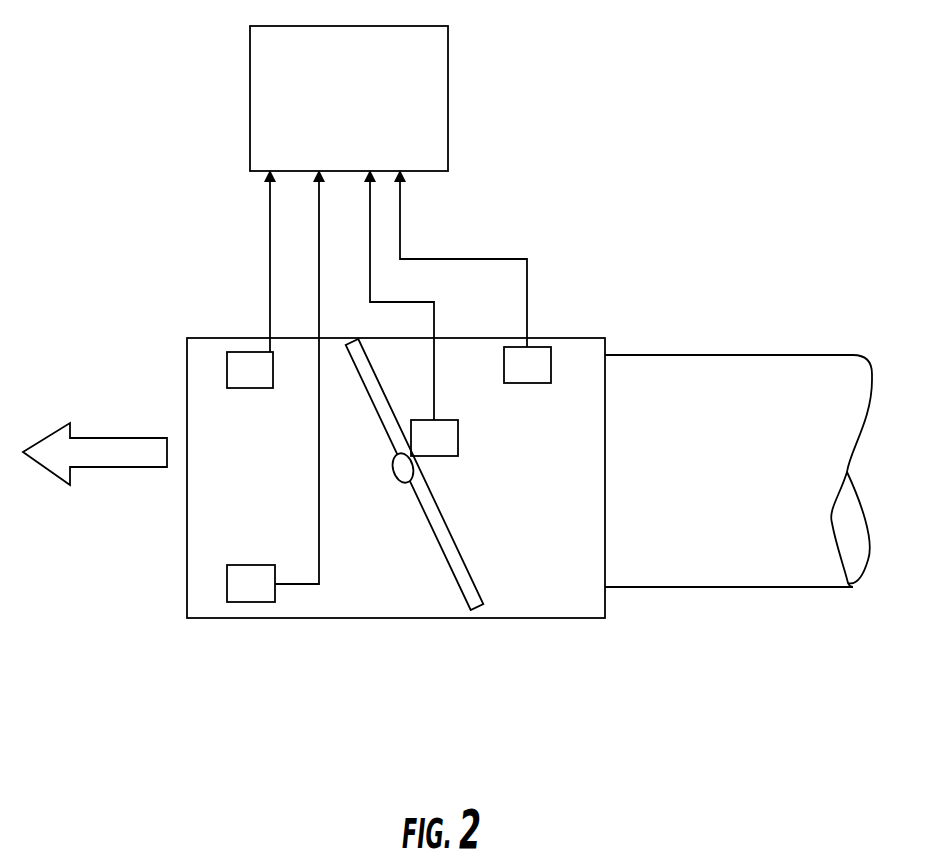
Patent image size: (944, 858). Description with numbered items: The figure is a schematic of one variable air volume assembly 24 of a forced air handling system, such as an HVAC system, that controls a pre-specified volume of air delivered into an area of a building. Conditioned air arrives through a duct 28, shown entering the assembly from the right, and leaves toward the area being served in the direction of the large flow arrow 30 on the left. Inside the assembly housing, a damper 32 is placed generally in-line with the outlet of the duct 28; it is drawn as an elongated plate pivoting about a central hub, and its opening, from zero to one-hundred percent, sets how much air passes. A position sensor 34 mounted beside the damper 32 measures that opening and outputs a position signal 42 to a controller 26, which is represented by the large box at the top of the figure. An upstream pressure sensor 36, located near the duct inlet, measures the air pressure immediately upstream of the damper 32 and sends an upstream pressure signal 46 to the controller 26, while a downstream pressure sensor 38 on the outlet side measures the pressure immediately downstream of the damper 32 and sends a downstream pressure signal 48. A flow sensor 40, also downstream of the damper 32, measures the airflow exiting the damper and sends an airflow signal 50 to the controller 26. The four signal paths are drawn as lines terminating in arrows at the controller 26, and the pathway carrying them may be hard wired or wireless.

The variable air volume assembly 24 is at (392, 622).
The controller 26 is at (450, 122).
The duct 28 is at (748, 355).
The arrows 30 is at (132, 438).
The damper 32 is at (444, 523).
The position sensor 34 is at (458, 445).
The upstream pressure sensor 36 is at (551, 363).
The downstream pressure sensor 38 is at (248, 352).
The flow sensor 40 is at (245, 602).
The position signal 42 is at (435, 320).
The upstream pressure signal 46 is at (497, 259).
The downstream pressure signal 48 is at (268, 262).
The airflow signal 50 is at (318, 505).